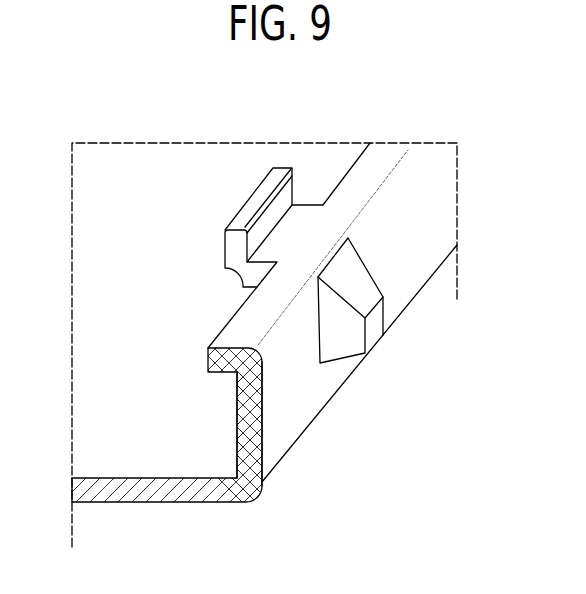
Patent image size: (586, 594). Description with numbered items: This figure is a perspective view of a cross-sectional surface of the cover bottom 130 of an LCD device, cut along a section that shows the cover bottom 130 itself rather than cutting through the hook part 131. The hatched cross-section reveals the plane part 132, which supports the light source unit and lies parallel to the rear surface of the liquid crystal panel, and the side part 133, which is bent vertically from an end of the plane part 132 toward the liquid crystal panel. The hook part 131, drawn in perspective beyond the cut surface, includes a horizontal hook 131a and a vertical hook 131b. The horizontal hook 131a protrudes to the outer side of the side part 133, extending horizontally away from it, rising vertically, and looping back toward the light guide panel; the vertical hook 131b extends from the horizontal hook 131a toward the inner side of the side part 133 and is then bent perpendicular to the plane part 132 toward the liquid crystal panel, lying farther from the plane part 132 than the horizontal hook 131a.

The cover bottom 130 is at (297, 113).
The hook part 131 is at (377, 275).
The horizontal hook 131a is at (342, 338).
The vertical hook 131b is at (262, 229).
The plane part 132 is at (145, 490).
The side part 133 is at (300, 405).